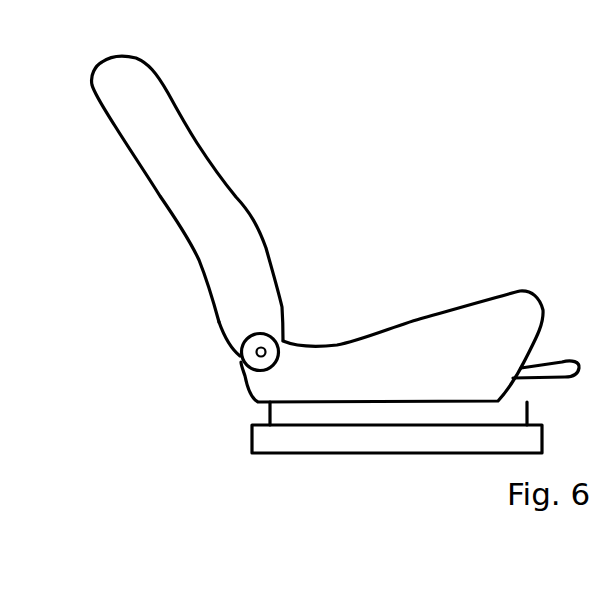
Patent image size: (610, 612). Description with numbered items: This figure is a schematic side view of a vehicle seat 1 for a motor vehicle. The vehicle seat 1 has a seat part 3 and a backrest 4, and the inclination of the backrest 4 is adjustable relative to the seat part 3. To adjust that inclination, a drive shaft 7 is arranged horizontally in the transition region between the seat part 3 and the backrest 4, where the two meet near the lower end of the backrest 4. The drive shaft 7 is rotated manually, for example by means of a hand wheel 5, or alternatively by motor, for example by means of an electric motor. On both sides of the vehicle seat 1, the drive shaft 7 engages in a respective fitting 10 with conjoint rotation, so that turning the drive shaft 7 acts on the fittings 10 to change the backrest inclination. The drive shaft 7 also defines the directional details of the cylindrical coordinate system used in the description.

The vehicle seat 1 is at (298, 172).
The seat part 3 is at (418, 330).
The backrest 4 is at (172, 147).
The hand wheel 5 is at (286, 341).
The drive shaft 7 is at (258, 356).
The fitting 10 is at (238, 355).